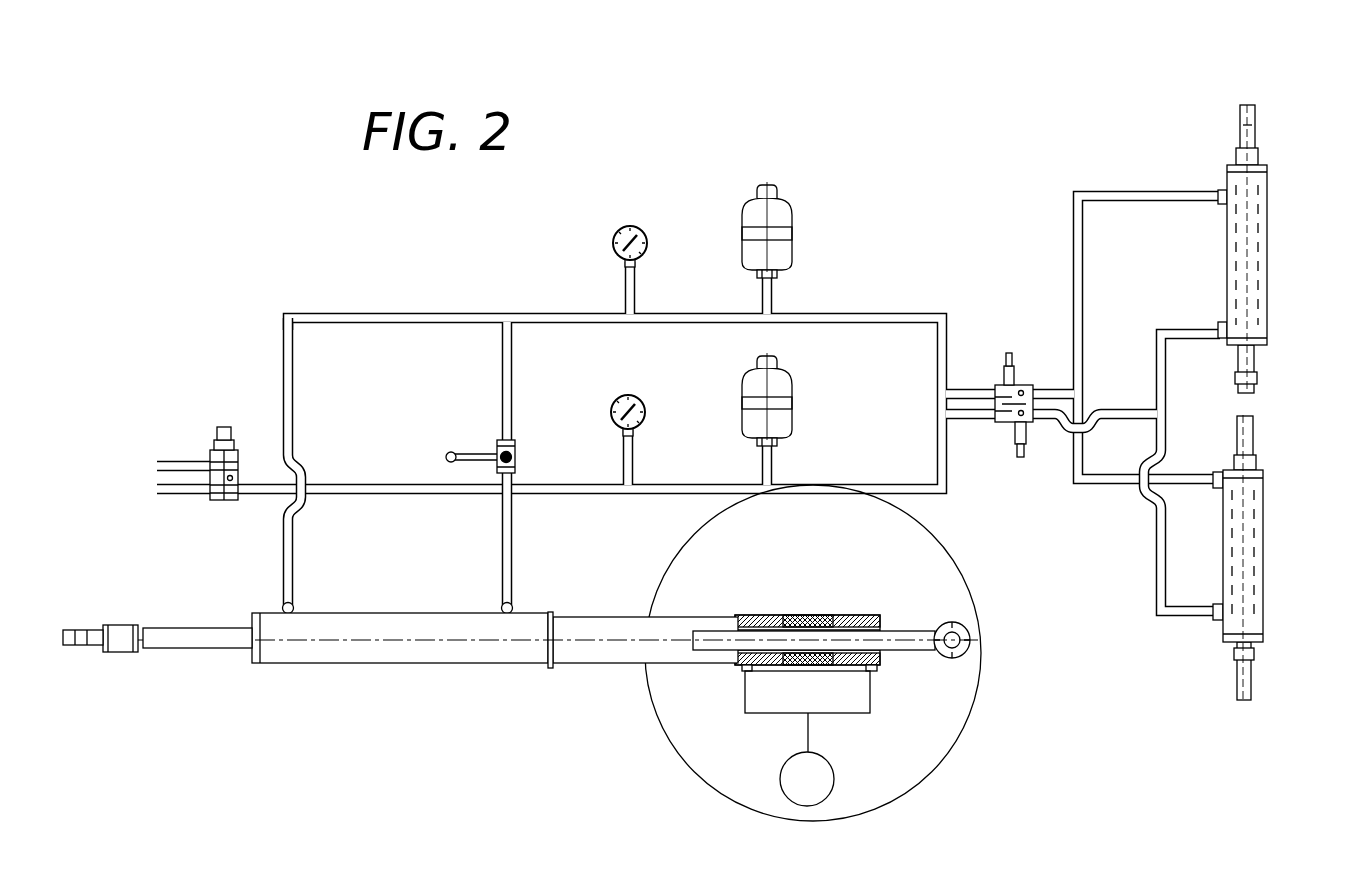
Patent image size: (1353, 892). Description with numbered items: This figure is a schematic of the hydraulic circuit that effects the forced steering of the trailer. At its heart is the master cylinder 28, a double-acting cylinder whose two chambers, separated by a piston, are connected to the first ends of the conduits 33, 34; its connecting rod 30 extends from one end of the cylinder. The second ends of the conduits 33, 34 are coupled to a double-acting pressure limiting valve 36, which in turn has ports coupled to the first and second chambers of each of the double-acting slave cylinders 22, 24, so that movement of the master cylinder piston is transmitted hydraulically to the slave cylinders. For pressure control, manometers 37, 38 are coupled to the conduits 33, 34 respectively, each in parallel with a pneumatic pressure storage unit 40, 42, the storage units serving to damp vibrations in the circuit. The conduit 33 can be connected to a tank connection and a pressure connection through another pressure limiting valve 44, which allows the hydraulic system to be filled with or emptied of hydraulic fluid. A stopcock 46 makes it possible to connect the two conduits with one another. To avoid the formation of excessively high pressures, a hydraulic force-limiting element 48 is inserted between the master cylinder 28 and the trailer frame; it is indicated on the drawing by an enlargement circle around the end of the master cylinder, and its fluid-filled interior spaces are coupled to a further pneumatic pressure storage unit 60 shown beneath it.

The slave cylinder 22 is at (1256, 235).
The slave cylinder 24 is at (1251, 530).
The master cylinder 28 is at (376, 648).
The connecting rod 30 is at (202, 642).
The conduit 33 is at (511, 533).
The conduit 34 is at (292, 585).
The double-acting pressure limiting valve 36 is at (1029, 448).
The manometer 37 is at (646, 414).
The manometer 38 is at (617, 238).
The pneumatic pressure storage unit 40 is at (781, 419).
The pneumatic pressure storage unit 42 is at (782, 212).
The pressure limiting valve 44 is at (228, 500).
The stopcock 46 is at (515, 458).
The hydraulic force-limiting element 48 is at (788, 596).
The pneumatic pressure storage unit 60 is at (817, 778).